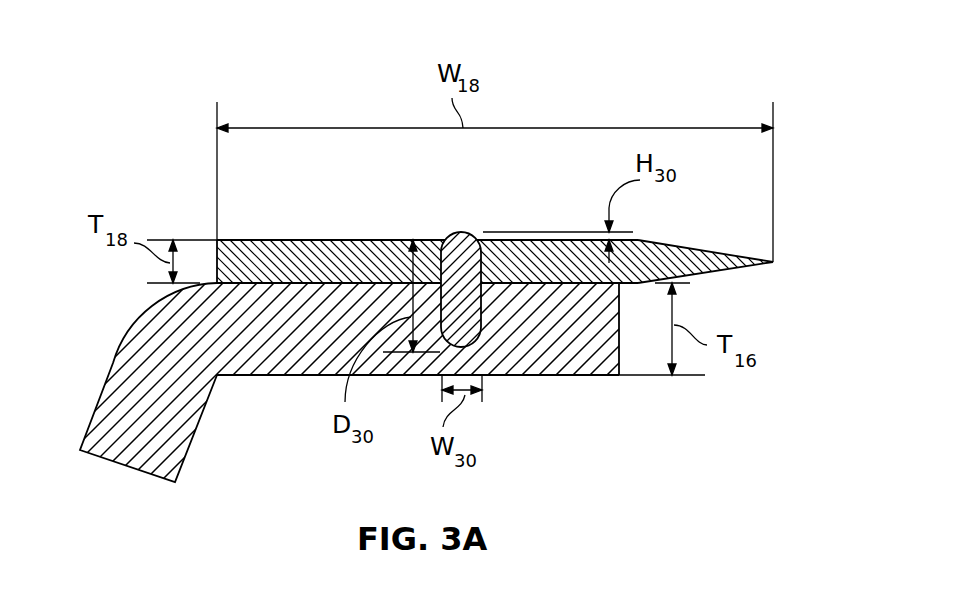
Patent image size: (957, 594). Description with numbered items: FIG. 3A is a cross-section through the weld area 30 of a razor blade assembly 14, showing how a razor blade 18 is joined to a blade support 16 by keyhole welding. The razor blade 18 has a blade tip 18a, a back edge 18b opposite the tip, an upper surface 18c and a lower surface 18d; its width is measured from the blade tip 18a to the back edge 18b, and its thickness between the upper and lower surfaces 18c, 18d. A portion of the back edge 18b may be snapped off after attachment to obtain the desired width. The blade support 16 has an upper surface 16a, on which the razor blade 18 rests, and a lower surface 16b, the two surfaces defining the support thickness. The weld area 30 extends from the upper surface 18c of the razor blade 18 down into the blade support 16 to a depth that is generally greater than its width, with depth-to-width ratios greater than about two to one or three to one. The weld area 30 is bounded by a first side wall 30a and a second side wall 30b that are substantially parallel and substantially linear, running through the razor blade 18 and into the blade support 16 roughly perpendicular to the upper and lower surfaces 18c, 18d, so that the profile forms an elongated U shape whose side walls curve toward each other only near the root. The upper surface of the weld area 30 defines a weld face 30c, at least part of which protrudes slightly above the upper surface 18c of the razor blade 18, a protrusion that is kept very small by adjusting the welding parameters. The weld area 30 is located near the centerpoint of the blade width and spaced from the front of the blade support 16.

The razor blade assembly 14 is at (409, 308).
The blade support 16 is at (409, 308).
The upper surface 16a is at (523, 283).
The lower surface 16b is at (292, 378).
The razor blade 18 is at (478, 291).
The blade tip 18a is at (773, 262).
The back edge 18b is at (215, 252).
The upper surface 18c is at (314, 240).
The lower surface 18d is at (588, 284).
The weld area 30 is at (462, 284).
The first side wall 30a is at (437, 260).
The second side wall 30b is at (484, 303).
The weld face 30c is at (474, 233).